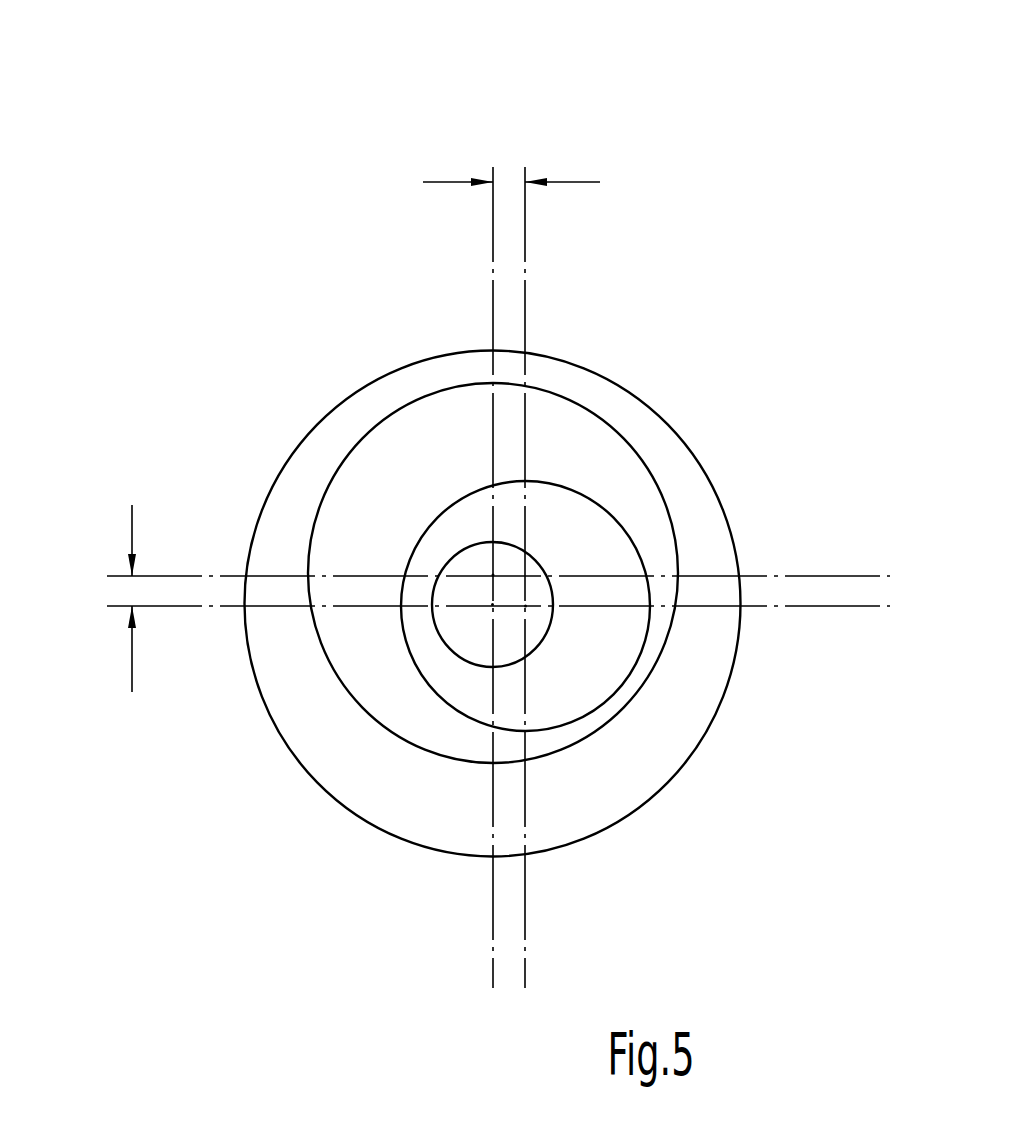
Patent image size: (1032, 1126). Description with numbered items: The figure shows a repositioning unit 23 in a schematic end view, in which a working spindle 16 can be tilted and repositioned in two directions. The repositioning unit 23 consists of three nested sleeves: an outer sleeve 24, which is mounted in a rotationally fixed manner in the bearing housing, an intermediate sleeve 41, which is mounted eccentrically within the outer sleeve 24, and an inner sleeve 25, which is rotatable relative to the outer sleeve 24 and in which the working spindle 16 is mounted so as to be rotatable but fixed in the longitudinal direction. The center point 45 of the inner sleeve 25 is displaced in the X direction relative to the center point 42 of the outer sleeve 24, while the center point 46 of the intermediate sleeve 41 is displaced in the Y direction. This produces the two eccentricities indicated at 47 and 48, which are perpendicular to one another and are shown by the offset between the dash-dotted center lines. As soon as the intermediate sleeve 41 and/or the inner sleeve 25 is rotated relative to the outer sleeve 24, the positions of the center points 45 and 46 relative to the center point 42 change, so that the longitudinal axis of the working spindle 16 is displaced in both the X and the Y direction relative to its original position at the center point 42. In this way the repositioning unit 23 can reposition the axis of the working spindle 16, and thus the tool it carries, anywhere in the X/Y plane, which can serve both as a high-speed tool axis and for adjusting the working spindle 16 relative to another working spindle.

The working spindle 16 is at (482, 647).
The repositioning unit 23 is at (563, 435).
The outer sleeve 24 is at (638, 422).
The inner sleeve 25 is at (603, 650).
The intermediate sleeve 41 is at (644, 520).
The center point of the outer sleeve 42 is at (490, 603).
The center point of the inner sleeve 45 is at (530, 607).
The center point of the intermediate sleeve 46 is at (493, 575).
The eccentricity 47 is at (507, 182).
The eccentricity 48 is at (118, 595).